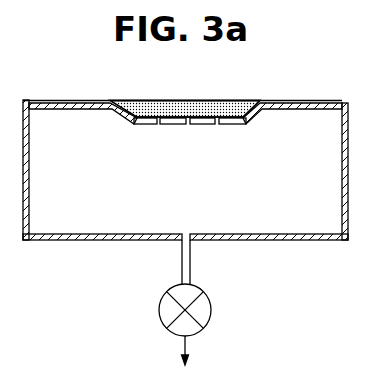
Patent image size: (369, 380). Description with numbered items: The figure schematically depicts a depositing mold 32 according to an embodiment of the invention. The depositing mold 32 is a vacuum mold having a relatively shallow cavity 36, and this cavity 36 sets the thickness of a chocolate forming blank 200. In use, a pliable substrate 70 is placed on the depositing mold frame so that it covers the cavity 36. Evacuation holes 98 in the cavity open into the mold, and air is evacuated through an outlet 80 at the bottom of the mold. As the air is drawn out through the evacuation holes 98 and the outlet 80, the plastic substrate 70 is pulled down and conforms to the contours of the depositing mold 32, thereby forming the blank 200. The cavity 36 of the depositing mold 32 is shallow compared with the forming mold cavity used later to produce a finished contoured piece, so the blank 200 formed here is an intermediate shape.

The depositing mold 32 is at (95, 240).
The pliable substrate 70 is at (300, 102).
The chocolate forming blank 200 is at (166, 103).
The cavity 36 is at (207, 100).
The evacuation holes 98 is at (241, 119).
The outlet 80 is at (212, 304).